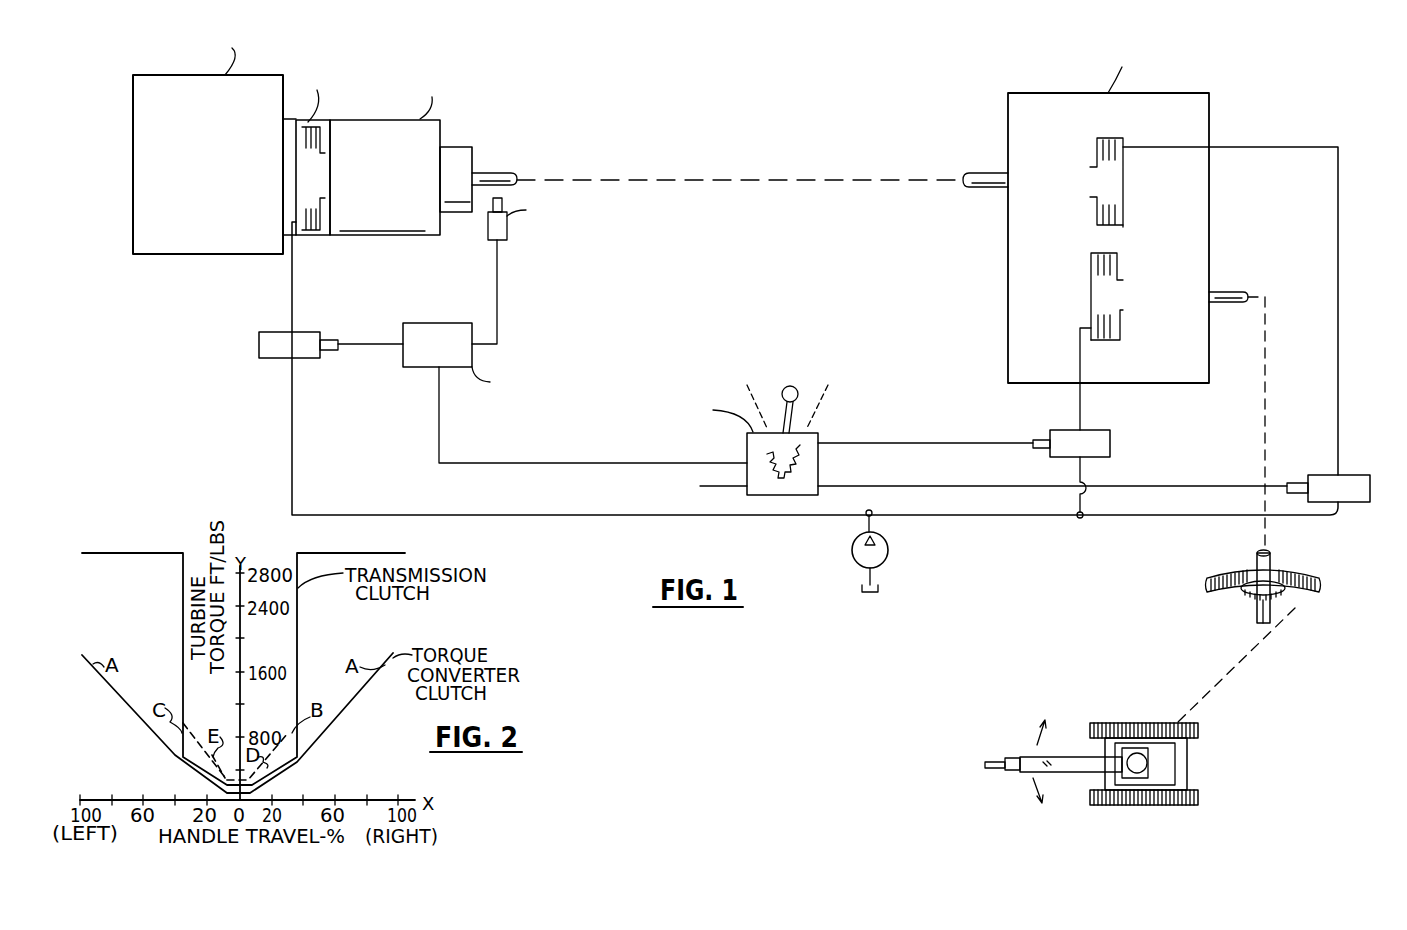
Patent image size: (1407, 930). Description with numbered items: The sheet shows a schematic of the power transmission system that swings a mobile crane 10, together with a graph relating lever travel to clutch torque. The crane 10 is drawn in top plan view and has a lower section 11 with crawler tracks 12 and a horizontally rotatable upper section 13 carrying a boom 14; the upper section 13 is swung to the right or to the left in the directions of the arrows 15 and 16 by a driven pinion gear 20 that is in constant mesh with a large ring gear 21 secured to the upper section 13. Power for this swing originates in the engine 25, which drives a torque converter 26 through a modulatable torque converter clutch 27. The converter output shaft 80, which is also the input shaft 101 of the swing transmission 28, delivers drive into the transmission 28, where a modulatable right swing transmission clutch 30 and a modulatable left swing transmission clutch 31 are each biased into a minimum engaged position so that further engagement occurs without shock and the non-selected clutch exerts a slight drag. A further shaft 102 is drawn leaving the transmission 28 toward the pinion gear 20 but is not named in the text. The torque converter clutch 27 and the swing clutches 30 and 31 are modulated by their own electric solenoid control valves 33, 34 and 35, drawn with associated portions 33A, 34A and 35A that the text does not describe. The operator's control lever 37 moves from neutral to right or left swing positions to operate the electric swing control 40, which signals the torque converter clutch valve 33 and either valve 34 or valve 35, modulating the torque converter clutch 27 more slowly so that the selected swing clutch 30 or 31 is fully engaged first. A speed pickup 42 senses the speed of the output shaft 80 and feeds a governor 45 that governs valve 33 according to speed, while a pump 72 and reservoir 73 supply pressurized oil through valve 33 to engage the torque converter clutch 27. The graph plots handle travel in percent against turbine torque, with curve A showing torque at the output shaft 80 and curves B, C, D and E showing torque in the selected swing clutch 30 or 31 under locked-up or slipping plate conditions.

The mobile crane 10 is at (1130, 753).
The lower section 11 is at (1187, 757).
The crawler tracks 12 is at (1200, 727).
The upper section 13 is at (1123, 750).
The boom 14 is at (1080, 757).
The arrow 15 is at (1037, 732).
The arrow 16 is at (1033, 785).
The pinion gear 20 is at (1240, 593).
The ring gear 21 is at (1298, 573).
The engine 25 is at (232, 255).
The torque converter 26 is at (413, 236).
The torque converter clutch 27 is at (323, 236).
The swing transmission 28 is at (1200, 93).
The right swing transmission clutch 30 is at (1120, 138).
The left swing transmission clutch 31 is at (1092, 260).
The solenoid control valve 33 is at (307, 332).
The solenoid 33A is at (332, 353).
The solenoid control valve 34 is at (1357, 475).
The solenoid 34A is at (1293, 482).
The solenoid control valve 35 is at (1108, 432).
The solenoid 35A is at (1037, 440).
The operator's control lever 37 is at (796, 408).
The electric swing control 40 is at (820, 462).
The speed pickup 42 is at (507, 233).
The governor 45 is at (435, 323).
The pump 72 is at (889, 548).
The reservoir 73 is at (880, 587).
The output shaft 80 is at (493, 170).
The input shaft 101 is at (982, 188).
The transmission output shaft 102 is at (1232, 292).